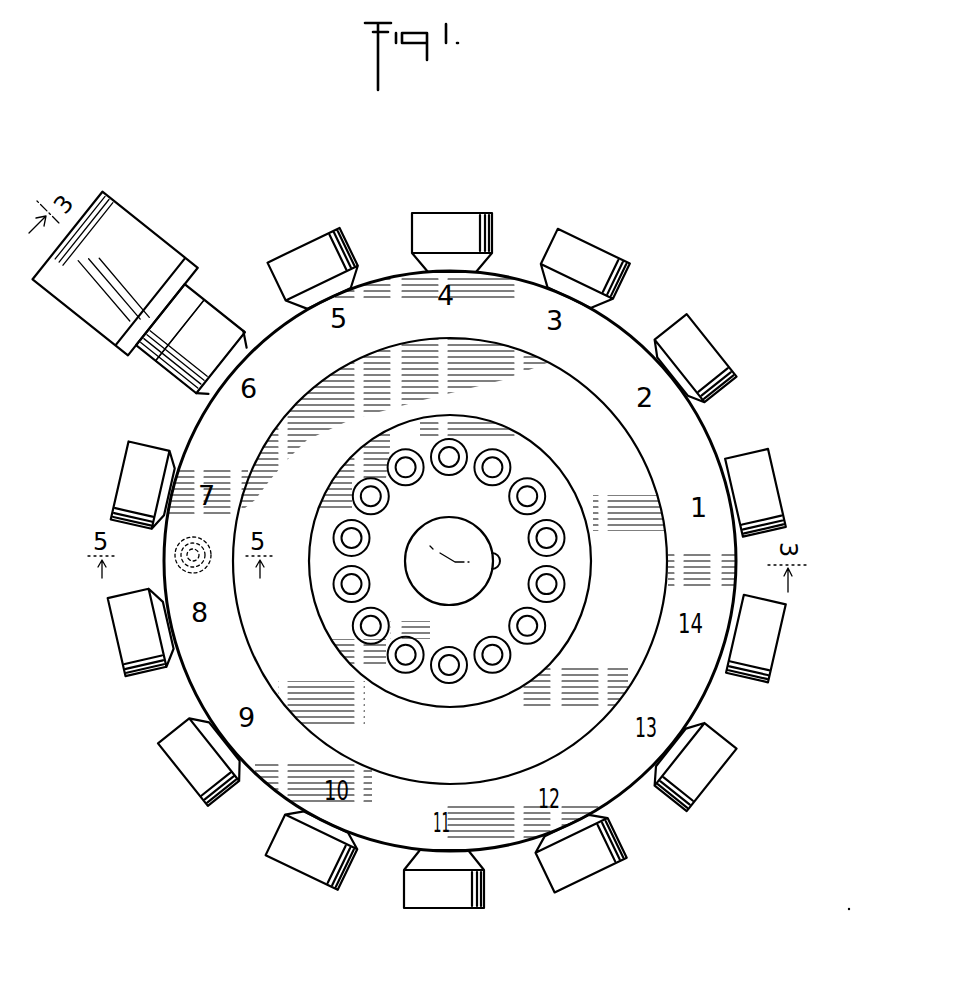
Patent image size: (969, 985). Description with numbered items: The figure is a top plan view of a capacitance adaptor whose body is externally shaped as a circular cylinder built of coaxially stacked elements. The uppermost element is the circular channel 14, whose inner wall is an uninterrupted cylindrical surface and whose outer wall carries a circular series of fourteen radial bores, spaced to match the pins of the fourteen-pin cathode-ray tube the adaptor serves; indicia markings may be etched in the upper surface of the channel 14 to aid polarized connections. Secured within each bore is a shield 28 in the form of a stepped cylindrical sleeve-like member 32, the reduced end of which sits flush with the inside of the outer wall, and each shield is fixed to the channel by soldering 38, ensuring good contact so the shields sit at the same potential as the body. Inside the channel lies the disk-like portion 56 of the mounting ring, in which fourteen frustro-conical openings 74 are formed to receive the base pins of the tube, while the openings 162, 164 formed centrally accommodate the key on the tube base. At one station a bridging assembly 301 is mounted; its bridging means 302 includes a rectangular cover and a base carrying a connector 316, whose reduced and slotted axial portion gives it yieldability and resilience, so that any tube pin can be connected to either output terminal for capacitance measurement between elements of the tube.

The circular channel 14 is at (503, 280).
The disk-like portion 56 is at (641, 558).
The openings 74 is at (412, 451).
The opening 162 is at (449, 519).
The opening 164 is at (501, 572).
The bridging assembly 301 is at (175, 288).
The bridging means 302 is at (150, 247).
The connector 316 is at (192, 297).
The stepped cylindrical sleeve-like member 32 is at (220, 307).
The shield 28 is at (234, 326).
The soldering 38 is at (247, 347).